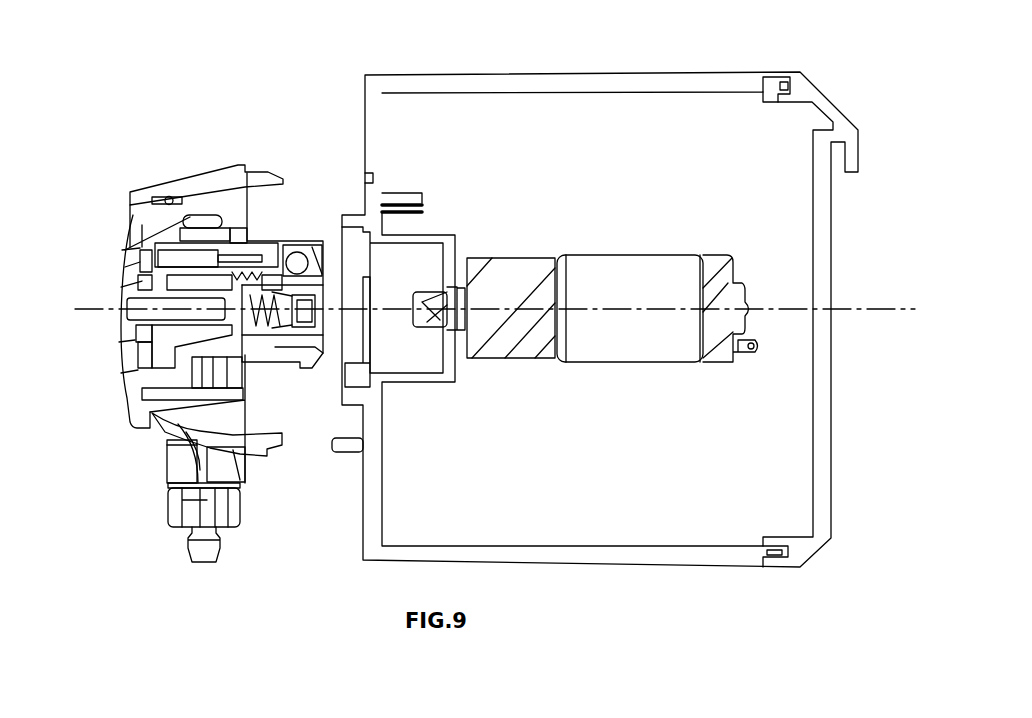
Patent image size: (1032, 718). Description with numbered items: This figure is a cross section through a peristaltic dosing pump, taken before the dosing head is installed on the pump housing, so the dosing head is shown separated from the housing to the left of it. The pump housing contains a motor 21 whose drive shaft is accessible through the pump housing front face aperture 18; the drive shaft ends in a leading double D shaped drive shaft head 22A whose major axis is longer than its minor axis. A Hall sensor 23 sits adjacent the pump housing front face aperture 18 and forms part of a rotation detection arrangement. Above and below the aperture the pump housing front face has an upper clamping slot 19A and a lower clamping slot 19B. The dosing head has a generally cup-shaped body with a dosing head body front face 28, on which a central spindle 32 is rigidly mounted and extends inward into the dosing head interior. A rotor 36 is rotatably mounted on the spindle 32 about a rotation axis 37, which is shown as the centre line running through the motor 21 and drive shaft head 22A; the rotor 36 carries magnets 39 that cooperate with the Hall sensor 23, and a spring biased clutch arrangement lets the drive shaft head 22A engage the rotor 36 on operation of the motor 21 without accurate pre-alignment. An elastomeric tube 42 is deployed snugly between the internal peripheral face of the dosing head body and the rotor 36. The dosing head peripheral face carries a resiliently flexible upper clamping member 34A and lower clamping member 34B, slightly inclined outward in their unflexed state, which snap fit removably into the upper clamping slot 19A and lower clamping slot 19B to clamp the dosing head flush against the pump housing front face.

The pump housing front face aperture 18 is at (338, 257).
The upper clamping slot 19A is at (372, 183).
The lower clamping slot 19B is at (338, 432).
The motor 21 is at (732, 265).
The drive shaft head 22A is at (413, 317).
The Hall sensor 23 is at (422, 222).
The dosing head body front face 28 is at (125, 236).
The central spindle 32 is at (127, 311).
The upper clamping member 34A is at (265, 173).
The lower clamping member 34B is at (197, 462).
The rotor 36 is at (182, 237).
The rotation axis 37 is at (884, 308).
The magnets 39 is at (299, 252).
The elastomeric tube 42 is at (197, 217).